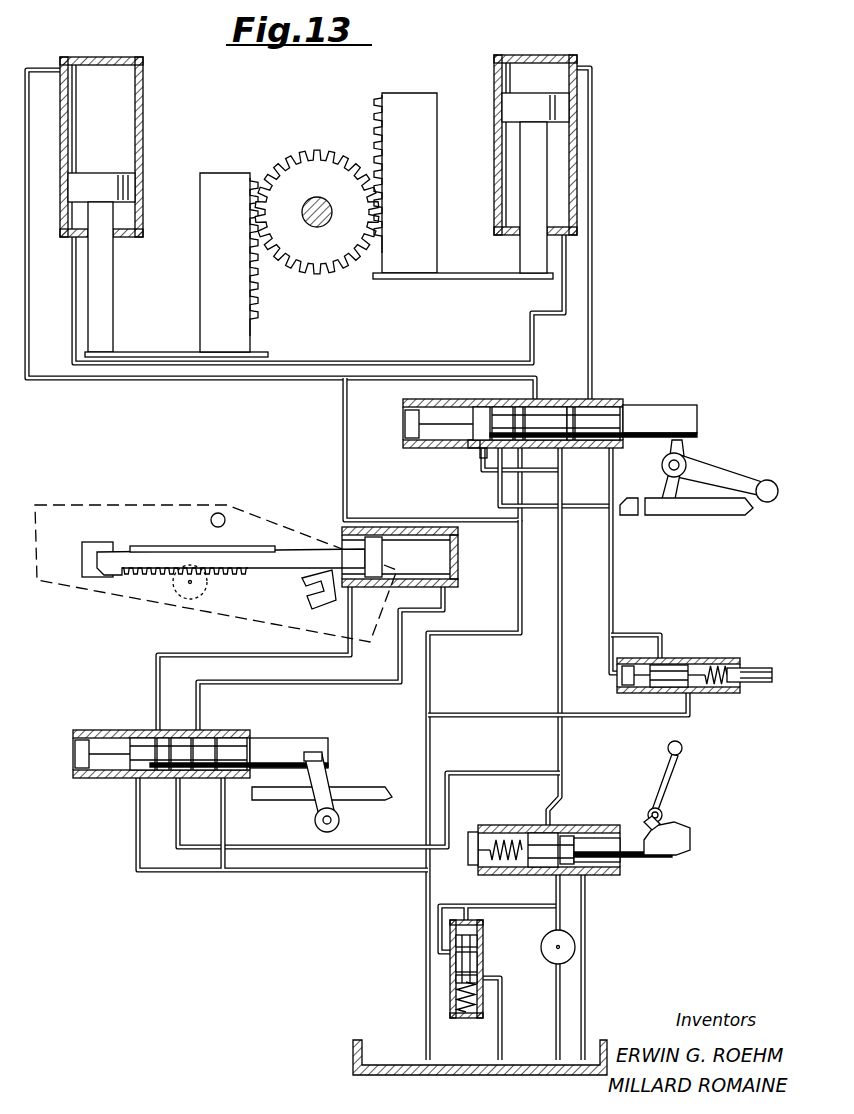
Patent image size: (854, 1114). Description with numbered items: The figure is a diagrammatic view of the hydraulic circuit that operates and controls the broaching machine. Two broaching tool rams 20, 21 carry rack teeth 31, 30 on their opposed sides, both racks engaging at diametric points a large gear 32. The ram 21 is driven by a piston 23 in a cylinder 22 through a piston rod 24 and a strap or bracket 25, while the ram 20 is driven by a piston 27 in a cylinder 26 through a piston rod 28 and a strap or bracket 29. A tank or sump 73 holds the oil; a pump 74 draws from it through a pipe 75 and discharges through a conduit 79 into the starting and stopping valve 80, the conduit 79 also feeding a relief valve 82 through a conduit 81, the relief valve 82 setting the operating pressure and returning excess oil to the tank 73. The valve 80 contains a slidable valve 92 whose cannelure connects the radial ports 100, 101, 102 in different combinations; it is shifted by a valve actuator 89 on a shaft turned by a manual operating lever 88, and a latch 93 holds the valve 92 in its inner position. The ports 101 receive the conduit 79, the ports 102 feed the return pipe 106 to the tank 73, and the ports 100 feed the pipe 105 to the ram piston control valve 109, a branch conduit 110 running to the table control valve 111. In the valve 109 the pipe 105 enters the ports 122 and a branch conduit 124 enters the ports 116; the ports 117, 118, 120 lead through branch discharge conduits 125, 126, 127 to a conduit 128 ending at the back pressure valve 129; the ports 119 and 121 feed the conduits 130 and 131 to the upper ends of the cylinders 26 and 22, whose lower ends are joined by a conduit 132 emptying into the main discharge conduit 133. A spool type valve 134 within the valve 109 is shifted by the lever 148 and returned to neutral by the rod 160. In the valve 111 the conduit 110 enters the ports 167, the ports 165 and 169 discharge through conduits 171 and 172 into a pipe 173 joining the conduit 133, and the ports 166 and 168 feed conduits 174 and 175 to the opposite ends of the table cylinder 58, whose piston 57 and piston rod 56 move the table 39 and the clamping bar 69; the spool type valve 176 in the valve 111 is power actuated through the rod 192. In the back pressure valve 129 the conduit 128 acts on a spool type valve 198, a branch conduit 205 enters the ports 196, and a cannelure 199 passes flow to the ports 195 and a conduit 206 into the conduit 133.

The broaching tool ram 20 is at (245, 251).
The broaching tool ram 21 is at (389, 173).
The cylinder 22 is at (494, 82).
The piston 23 is at (502, 108).
The piston rod 24 is at (520, 258).
The strap or bracket 25 is at (464, 282).
The cylinder 26 is at (138, 103).
The piston 27 is at (135, 188).
The piston rod 28 is at (113, 272).
The strap or bracket 29 is at (178, 345).
The rack teeth 30 is at (374, 114).
The rack teeth 31 is at (260, 315).
The gear 32 is at (312, 152).
The table 39 is at (120, 506).
The piston rod 56 is at (328, 542).
The piston 57 is at (356, 588).
The cylinder 58 is at (420, 592).
The clamping bar 69 is at (178, 531).
The tank or sump 73 is at (353, 1052).
The pump 74 is at (552, 948).
The pipe 75 is at (555, 1014).
The pipe or conduit 79 is at (548, 878).
The starting and stopping valve 80 is at (570, 847).
The pipe or conduit 81 is at (490, 906).
The relief valve 82 is at (484, 942).
The manual operating lever or handle 88 is at (674, 778).
The valve actuator 89 is at (646, 818).
The slidable valve 92 is at (506, 828).
The latch 93 is at (690, 832).
The radial ports 100 is at (538, 834).
The radial ports 101 is at (576, 878).
The radial ports 102 is at (622, 868).
The pipe or conduit 105 is at (565, 786).
The pipe or conduit 106 is at (586, 903).
The ram piston control valve 109 is at (527, 429).
The branch pipe or conduit 110 is at (420, 845).
The table control valve 111 is at (161, 764).
The radial ports 116 is at (472, 448).
The radial ports 117 is at (480, 466).
The radial ports 118 is at (522, 396).
The radial ports 119 is at (536, 396).
The radial ports 120 is at (560, 450).
The radial ports 121 is at (585, 450).
The radial ports 122 is at (614, 450).
The branch conduit 124 is at (483, 482).
The branch discharge conduit 125 is at (498, 506).
The branch discharge conduit 126 is at (522, 516).
The branch discharge conduit 127 is at (614, 484).
The conduit 128 is at (614, 578).
The back pressure valve 129 is at (748, 664).
The conduit 130 is at (228, 383).
The pipe or conduit 131 is at (594, 308).
The conduit or pipe 132 is at (436, 350).
The discharge pipe or conduit 133 is at (347, 468).
The spool type valve 134 is at (672, 408).
The lever or handle 148 is at (752, 478).
The rod 160 is at (730, 510).
The radial ports 165 is at (126, 788).
The radial ports 166 is at (158, 782).
The radial ports 167 is at (186, 782).
The radial ports 168 is at (203, 730).
The radial ports 169 is at (220, 782).
The branch discharge conduit 171 is at (136, 852).
The branch discharge conduit 172 is at (228, 830).
The pipe or conduit 173 is at (268, 872).
The pipe or conduit 174 is at (222, 657).
The pipe or conduit 175 is at (298, 685).
The spool type valve 176 is at (310, 732).
The rod 192 is at (366, 788).
The radial ports 195 is at (690, 664).
The radial ports 196 is at (670, 698).
The spool type valve 198 is at (698, 693).
The cannelure 199 is at (694, 659).
The branch conduit or pipe 205 is at (660, 640).
The conduit 206 is at (545, 716).